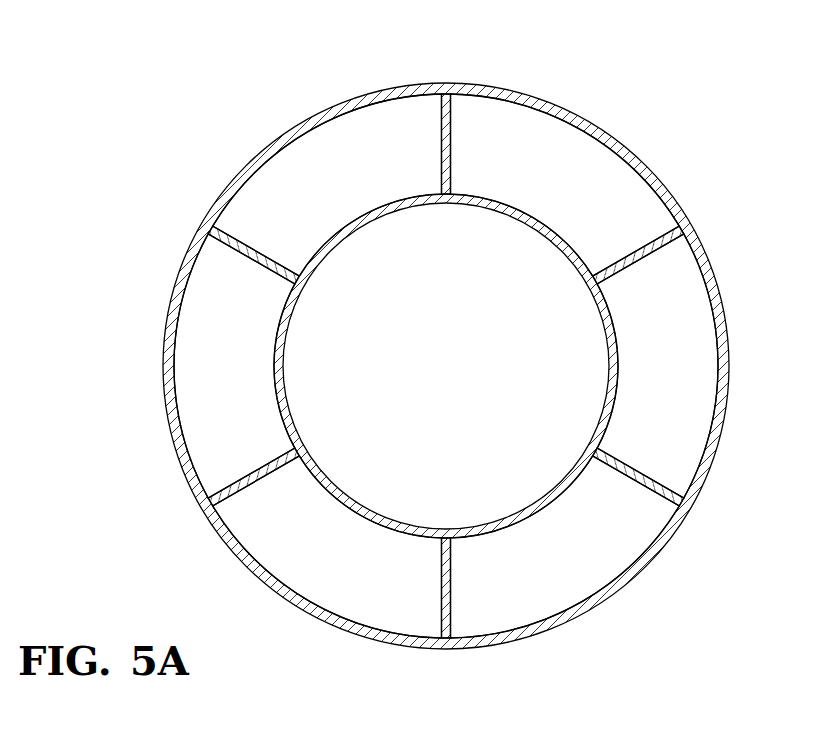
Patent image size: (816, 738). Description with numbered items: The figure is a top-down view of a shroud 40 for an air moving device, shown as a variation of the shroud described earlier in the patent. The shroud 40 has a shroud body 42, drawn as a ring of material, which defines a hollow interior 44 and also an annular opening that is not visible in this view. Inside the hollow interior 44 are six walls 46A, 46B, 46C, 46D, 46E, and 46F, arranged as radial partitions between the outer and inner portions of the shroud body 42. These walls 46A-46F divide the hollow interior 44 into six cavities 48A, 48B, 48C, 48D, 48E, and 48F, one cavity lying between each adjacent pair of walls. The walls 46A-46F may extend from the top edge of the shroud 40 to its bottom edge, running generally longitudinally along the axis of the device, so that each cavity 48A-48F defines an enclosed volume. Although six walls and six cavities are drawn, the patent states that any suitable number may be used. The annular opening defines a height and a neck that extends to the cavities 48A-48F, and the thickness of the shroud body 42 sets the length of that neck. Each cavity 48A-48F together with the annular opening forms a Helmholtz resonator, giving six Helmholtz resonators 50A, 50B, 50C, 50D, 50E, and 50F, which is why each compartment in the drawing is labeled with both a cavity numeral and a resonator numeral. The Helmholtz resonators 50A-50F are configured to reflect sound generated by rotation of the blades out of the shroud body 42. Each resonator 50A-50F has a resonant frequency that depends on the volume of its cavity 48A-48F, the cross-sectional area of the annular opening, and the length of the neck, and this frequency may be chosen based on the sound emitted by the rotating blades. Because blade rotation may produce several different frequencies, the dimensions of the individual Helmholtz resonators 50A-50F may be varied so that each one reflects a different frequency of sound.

The shroud 40 is at (247, 173).
The shroud body 42 is at (178, 268).
The hollow interior 44 is at (213, 438).
The wall 46A is at (238, 232).
The wall 46B is at (452, 141).
The wall 46C is at (660, 243).
The wall 46D is at (650, 495).
The wall 46E is at (452, 600).
The wall 46F is at (237, 497).
The cavity 48A is at (327, 185).
The cavity 48B is at (565, 185).
The cavity 48C is at (657, 366).
The cavity 48D is at (565, 547).
The cavity 48E is at (327, 547).
The cavity 48F is at (234, 366).
The Helmholtz resonator 50A is at (327, 185).
The Helmholtz resonator 50B is at (565, 185).
The Helmholtz resonator 50C is at (657, 366).
The Helmholtz resonator 50D is at (565, 547).
The Helmholtz resonator 50E is at (327, 547).
The Helmholtz resonator 50F is at (234, 366).